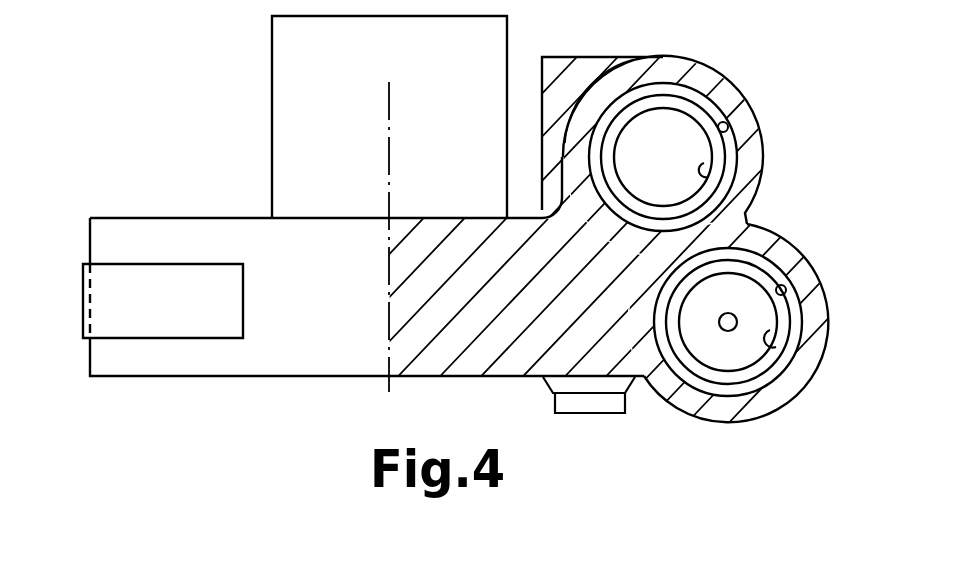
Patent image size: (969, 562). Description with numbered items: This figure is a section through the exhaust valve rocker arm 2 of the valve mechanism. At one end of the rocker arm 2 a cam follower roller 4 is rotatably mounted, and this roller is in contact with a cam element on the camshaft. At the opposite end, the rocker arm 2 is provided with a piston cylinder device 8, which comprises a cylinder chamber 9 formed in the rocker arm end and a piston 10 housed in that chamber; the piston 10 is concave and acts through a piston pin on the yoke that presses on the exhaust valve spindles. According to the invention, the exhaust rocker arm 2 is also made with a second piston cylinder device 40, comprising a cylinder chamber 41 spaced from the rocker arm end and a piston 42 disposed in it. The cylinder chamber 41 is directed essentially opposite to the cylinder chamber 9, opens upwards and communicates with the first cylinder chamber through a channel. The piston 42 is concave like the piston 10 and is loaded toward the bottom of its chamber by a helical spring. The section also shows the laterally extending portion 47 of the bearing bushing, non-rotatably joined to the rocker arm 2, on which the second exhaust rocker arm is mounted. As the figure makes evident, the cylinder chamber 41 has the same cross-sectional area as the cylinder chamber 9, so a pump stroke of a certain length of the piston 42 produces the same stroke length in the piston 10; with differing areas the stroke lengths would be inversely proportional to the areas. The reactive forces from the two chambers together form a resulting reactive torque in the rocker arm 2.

The exhaust valve rocker arm 2 is at (180, 382).
The cam follower roller 4 is at (83, 290).
The laterally extending portion 47 is at (272, 100).
The second piston cylinder device 40 is at (708, 88).
The cylinder chamber 41 is at (728, 124).
The piston 42 is at (708, 177).
The piston cylinder device 8 is at (763, 390).
The cylinder chamber 9 is at (785, 287).
The piston 10 is at (776, 347).